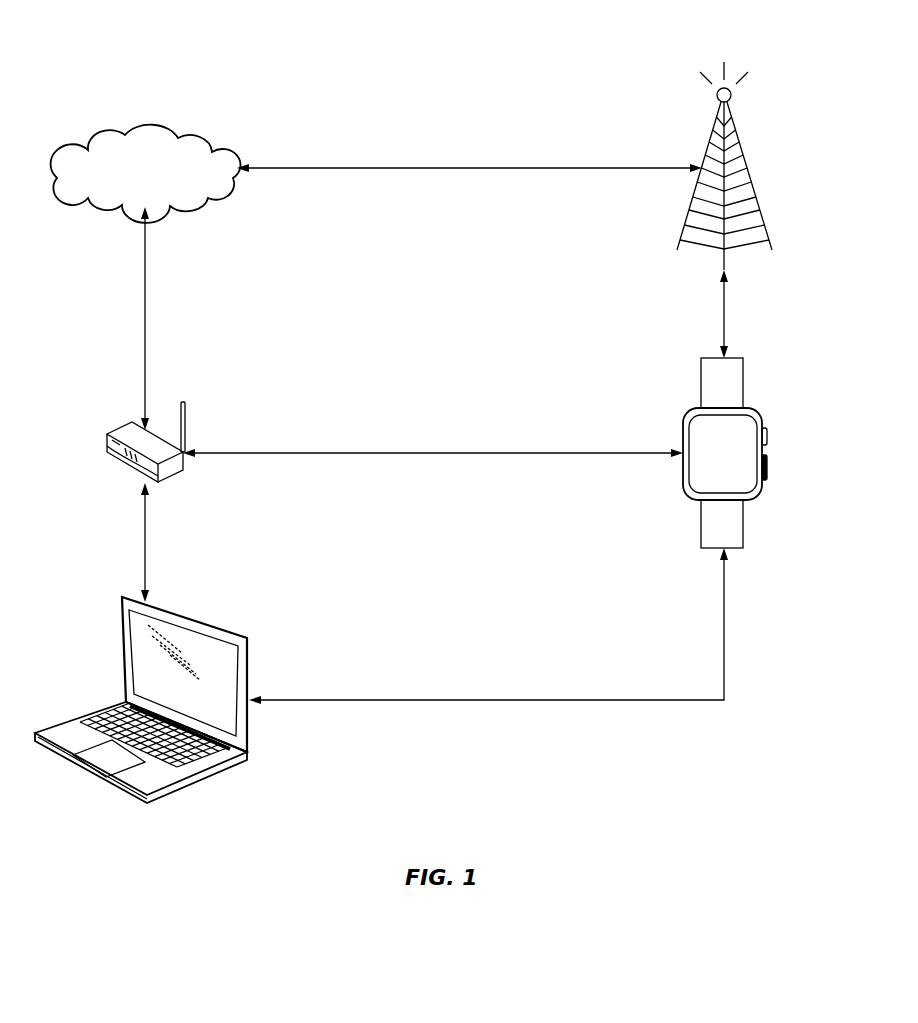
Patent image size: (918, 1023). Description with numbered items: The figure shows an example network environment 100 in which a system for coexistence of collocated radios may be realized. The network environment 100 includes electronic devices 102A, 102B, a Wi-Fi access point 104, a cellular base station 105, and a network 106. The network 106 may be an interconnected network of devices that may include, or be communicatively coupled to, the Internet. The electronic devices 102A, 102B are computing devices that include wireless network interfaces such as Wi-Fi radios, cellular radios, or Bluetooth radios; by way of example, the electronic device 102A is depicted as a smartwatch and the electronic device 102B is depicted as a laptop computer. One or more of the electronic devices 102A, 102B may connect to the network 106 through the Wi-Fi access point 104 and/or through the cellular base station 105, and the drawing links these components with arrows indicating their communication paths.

The network environment 100 is at (56, 76).
The network 106 is at (185, 135).
The cellular base station 105 is at (746, 156).
The Wi-Fi access point 104 is at (107, 432).
The electronic device 102A is at (767, 452).
The electronic device 102B is at (208, 622).